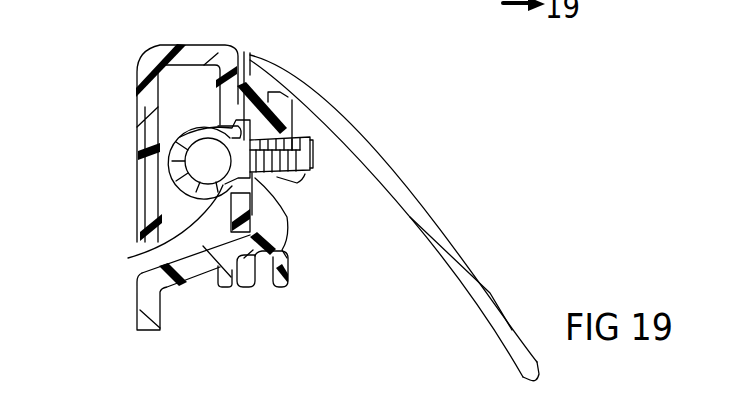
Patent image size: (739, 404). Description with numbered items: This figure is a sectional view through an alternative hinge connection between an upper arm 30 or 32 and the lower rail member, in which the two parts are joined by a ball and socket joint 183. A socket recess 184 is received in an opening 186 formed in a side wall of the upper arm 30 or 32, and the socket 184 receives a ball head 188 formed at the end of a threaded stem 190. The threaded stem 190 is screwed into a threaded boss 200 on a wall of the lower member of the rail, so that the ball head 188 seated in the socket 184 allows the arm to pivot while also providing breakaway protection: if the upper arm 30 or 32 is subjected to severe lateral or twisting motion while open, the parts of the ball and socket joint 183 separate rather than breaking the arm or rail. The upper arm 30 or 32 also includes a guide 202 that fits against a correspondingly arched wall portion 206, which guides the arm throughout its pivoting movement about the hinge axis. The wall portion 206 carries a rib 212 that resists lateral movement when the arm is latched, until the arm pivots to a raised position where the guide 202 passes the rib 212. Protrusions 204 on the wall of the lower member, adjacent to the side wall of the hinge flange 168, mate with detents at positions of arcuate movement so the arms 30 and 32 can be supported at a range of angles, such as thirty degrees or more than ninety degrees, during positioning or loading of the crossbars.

The upper arm 30 is at (182, 43).
The upper arm 32 is at (161, 70).
The hinge flange 168 is at (137, 92).
The ball and socket joint 183 is at (156, 195).
The socket recess 184 is at (207, 127).
The opening 186 is at (150, 257).
The ball head 188 is at (200, 160).
The threaded stem 190 is at (313, 166).
The threaded boss 200 is at (283, 115).
The guide 202 is at (288, 264).
The protrusions 204 is at (238, 110).
The arched wall portion 206 is at (250, 253).
The rib 212 is at (225, 288).